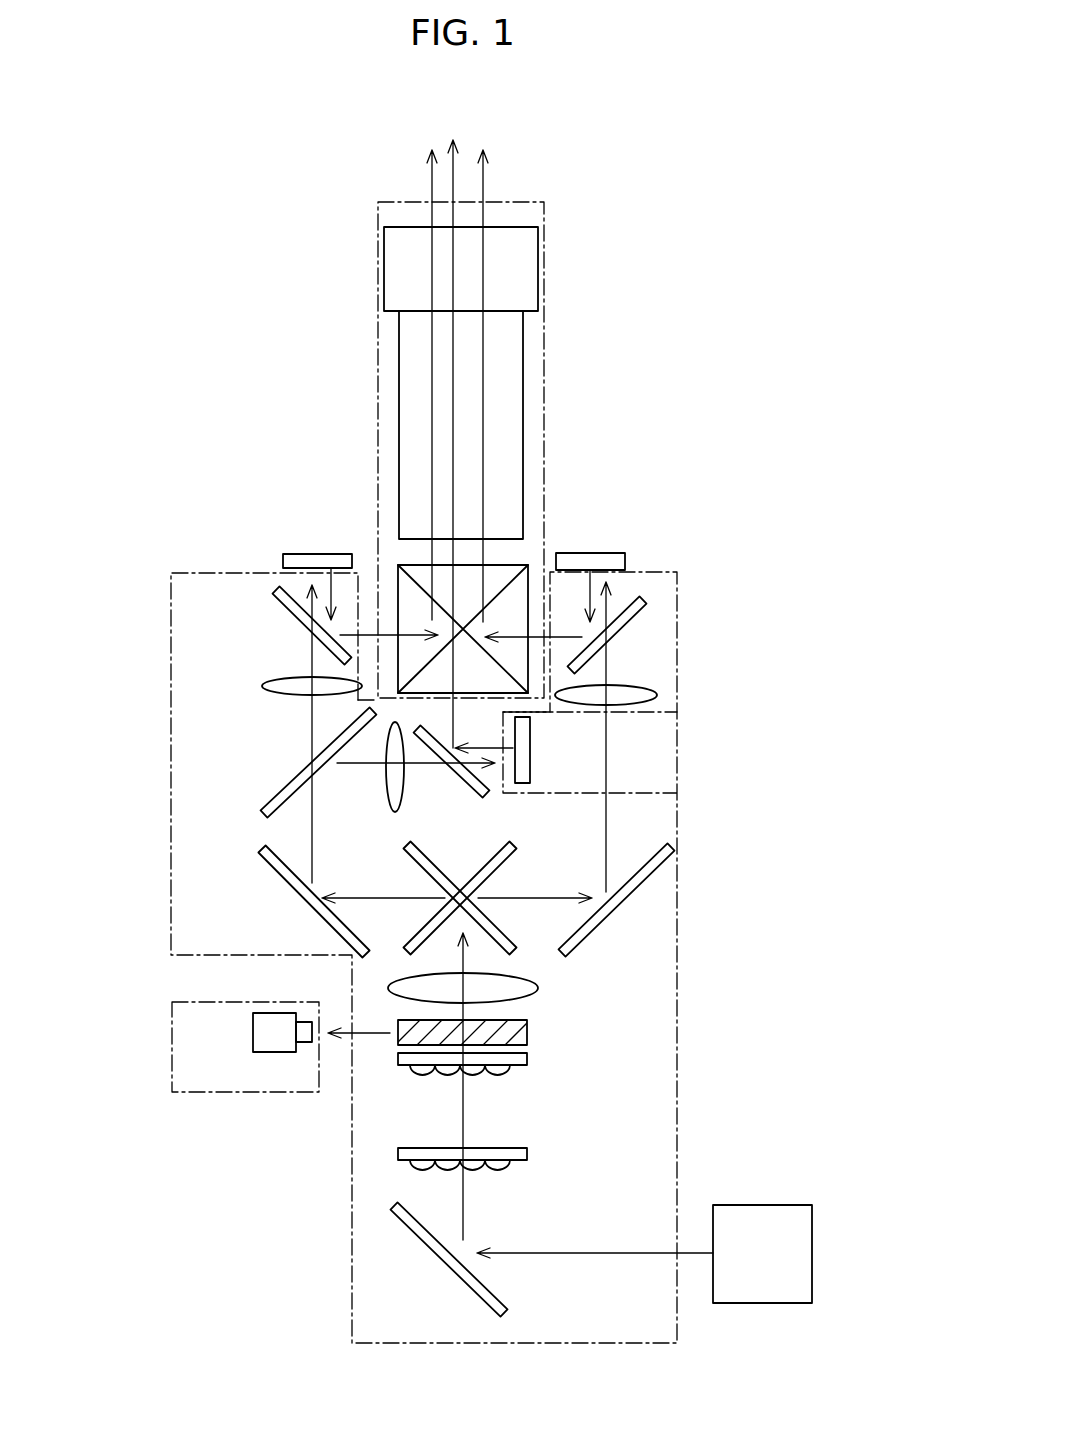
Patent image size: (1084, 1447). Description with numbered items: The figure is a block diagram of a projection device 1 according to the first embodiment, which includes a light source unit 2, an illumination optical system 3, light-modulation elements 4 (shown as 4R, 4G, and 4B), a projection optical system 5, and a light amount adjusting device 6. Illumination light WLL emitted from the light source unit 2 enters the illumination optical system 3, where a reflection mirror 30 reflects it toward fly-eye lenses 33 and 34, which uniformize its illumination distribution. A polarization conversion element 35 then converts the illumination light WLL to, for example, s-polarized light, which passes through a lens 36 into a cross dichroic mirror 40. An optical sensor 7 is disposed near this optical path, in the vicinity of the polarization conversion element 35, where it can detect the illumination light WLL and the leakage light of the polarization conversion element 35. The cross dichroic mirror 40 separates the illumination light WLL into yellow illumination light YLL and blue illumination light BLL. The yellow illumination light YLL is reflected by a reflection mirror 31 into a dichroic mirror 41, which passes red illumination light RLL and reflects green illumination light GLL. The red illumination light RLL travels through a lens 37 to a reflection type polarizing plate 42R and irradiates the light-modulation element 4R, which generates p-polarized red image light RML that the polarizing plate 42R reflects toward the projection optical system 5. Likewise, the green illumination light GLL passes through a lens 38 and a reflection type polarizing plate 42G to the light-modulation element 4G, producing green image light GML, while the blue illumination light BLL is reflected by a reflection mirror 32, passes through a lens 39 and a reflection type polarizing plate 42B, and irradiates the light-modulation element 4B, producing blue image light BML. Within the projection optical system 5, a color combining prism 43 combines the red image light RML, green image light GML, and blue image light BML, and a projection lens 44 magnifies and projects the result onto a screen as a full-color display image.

The projection device 1 is at (772, 424).
The light source unit 2 is at (765, 1205).
The illumination optical system 3 is at (351, 1255).
The light-modulation elements 4 is at (498, 641).
The light-modulation element 4R is at (310, 554).
The light-modulation element 4G is at (530, 740).
The light-modulation element 4B is at (613, 553).
The projection optical system 5 is at (378, 430).
The light amount adjusting device 6 is at (213, 1093).
The optical sensor 7 is at (253, 1035).
The reflection mirror 30 is at (453, 1275).
The reflection mirror 31 is at (282, 884).
The reflection mirror 32 is at (650, 852).
The fly-eye lens 33 is at (528, 1155).
The fly-eye lens 34 is at (528, 1062).
The polarization conversion element 35 is at (528, 1032).
The lens 36 is at (538, 988).
The lens 37 is at (263, 686).
The lens 38 is at (404, 788).
The lens 39 is at (658, 692).
The cross dichroic mirror 40 is at (458, 874).
The dichroic mirror 41 is at (283, 795).
The reflection type polarizing plate 42R is at (298, 620).
The reflection type polarizing plate 42G is at (491, 790).
The reflection type polarizing plate 42B is at (636, 614).
The color combining prism 43 is at (505, 565).
The projection lens 44 is at (524, 349).
The red image light RML is at (434, 381).
The green image light GML is at (470, 748).
The blue image light BML is at (560, 637).
The red illumination light RLL is at (311, 712).
The green illumination light GLL is at (352, 766).
The blue illumination light BLL is at (608, 770).
The yellow illumination light YLL is at (366, 896).
The illumination light WLL is at (362, 1028).